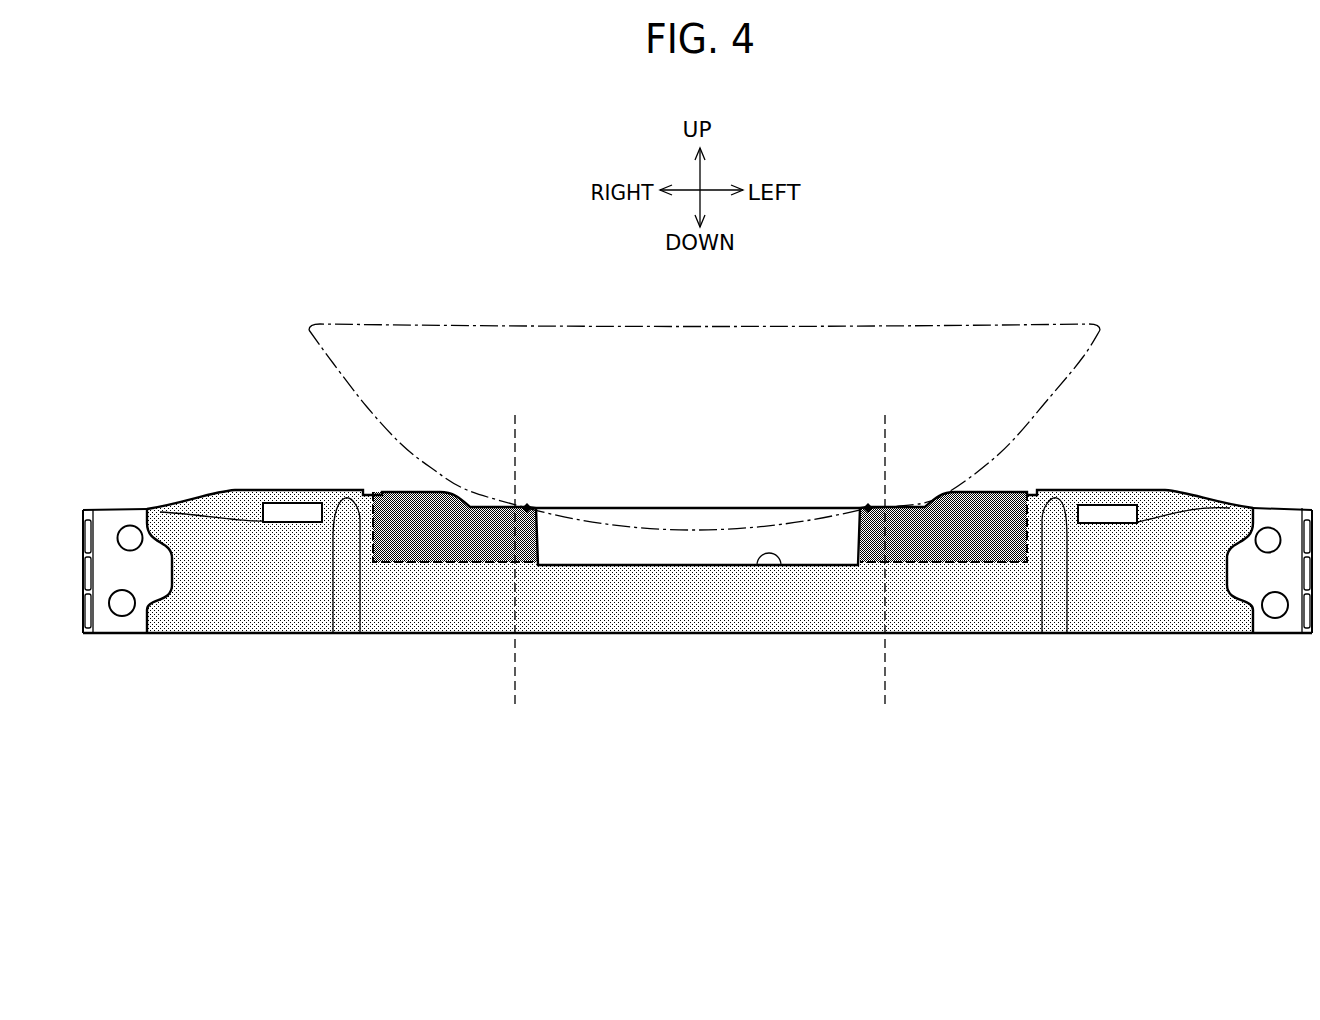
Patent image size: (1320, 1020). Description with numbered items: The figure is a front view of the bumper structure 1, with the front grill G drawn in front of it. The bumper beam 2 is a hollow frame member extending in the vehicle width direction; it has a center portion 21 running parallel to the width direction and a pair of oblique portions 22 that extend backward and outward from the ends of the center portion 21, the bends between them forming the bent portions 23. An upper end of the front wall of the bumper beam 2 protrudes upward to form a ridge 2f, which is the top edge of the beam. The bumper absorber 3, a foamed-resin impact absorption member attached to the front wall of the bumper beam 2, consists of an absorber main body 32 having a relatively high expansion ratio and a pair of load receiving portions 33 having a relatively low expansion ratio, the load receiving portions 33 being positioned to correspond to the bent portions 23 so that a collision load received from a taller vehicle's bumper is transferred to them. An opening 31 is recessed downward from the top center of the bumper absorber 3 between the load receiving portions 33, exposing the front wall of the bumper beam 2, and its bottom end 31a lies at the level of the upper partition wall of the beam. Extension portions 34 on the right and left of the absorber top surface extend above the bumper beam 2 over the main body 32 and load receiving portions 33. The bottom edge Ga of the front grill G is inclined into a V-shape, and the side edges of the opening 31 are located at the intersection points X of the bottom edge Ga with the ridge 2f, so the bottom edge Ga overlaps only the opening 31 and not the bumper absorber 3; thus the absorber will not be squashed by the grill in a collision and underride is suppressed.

The bumper structure 1 is at (1172, 418).
The bumper beam 2 is at (1279, 498).
The ridge 2f is at (615, 505).
The bumper absorber 3 is at (637, 640).
The center portion 21 is at (658, 505).
The oblique portions 22 is at (113, 634).
The bent portions 23 is at (515, 680).
The opening 31 is at (772, 568).
The bottom end 31a is at (729, 559).
The absorber main body 32 is at (1142, 585).
The load receiving portions 33 is at (443, 535).
The extension portions 34 is at (398, 488).
The front grill G is at (867, 327).
The bottom edge Ga is at (777, 517).
The intersection points X is at (530, 502).